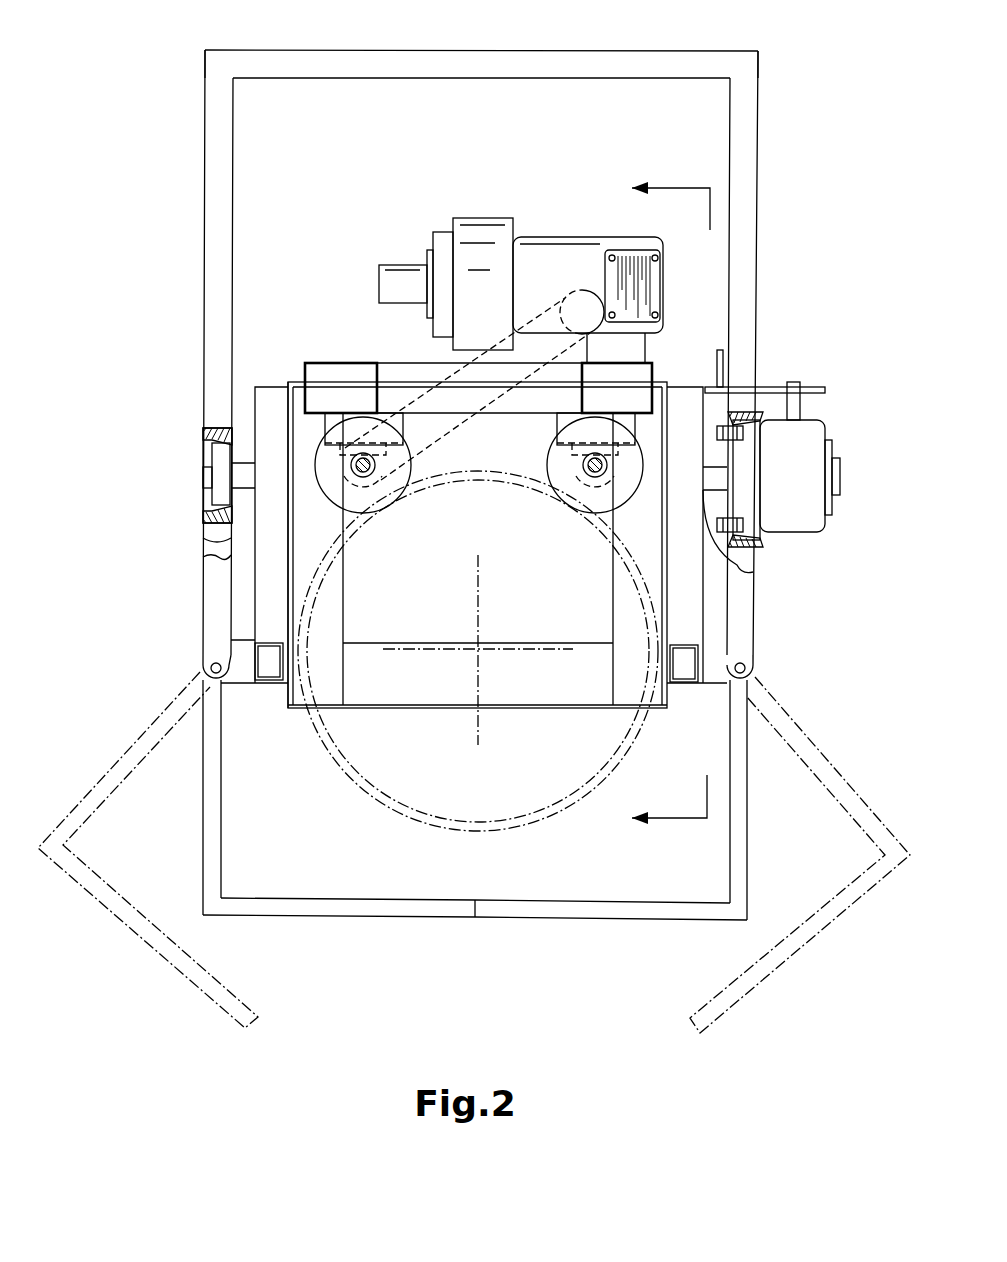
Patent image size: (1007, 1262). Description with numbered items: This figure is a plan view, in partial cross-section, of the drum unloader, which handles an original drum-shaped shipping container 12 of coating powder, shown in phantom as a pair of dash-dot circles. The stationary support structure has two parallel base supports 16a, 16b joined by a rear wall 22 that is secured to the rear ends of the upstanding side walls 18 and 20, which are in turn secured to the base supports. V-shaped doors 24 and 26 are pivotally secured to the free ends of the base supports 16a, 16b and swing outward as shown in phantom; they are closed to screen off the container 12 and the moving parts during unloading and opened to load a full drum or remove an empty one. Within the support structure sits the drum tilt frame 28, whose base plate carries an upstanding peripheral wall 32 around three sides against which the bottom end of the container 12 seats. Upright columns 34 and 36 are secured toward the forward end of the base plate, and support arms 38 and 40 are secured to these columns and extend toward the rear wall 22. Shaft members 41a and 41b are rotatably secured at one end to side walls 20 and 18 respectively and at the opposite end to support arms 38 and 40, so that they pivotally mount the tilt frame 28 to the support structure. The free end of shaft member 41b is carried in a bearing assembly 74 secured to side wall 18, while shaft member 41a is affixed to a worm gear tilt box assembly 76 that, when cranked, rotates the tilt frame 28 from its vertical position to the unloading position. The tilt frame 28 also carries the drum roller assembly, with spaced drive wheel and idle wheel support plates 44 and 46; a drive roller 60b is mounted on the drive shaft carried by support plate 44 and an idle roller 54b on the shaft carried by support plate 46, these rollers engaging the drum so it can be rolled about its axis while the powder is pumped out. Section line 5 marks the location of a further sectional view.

The section line 5- 5 is at (658, 505).
The drum-shaped shipping container 12 is at (397, 813).
The base support 16a is at (748, 258).
The base support 16b is at (212, 258).
The side wall 18 is at (210, 512).
The side wall 20 is at (763, 545).
The rear wall 22 is at (473, 62).
The V-shaped door 24 is at (365, 907).
The V-shaped door 26 is at (545, 908).
The drum tilt frame 28 is at (296, 748).
The upstanding peripheral wall 32 is at (287, 437).
The upright column 34 is at (687, 685).
The upright column 36 is at (270, 683).
The support arm 38 is at (695, 618).
The support arm 40 is at (270, 598).
The shaft member 41a is at (703, 490).
The shaft member 41b is at (250, 478).
The drive wheel support plate 44 is at (325, 365).
The idle wheel support plate 46 is at (640, 357).
The idle roller 54b is at (592, 497).
The drive roller 60b is at (372, 493).
The bearing assembly 74 is at (190, 436).
The tilt box assembly 76 is at (840, 414).